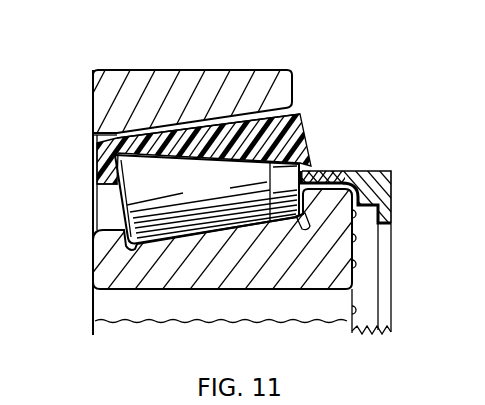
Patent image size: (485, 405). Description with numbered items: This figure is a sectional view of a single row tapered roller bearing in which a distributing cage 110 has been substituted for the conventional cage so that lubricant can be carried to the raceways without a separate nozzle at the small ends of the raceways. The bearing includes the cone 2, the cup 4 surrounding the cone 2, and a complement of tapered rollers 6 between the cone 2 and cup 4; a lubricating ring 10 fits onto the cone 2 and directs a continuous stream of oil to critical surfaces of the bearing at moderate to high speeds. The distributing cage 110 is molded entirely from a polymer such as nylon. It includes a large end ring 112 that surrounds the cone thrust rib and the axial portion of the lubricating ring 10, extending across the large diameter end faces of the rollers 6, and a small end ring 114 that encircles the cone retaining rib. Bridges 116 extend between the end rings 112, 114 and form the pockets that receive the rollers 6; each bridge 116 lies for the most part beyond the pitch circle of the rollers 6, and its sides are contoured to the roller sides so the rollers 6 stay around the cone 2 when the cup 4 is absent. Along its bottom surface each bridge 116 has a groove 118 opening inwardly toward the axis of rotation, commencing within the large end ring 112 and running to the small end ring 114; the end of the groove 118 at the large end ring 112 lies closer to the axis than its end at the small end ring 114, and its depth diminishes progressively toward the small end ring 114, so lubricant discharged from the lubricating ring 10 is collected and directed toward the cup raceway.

The cup 4 is at (178, 87).
The bridges 116 is at (300, 115).
The distributing cage 110 is at (322, 129).
The large end ring 112 is at (311, 156).
The small end ring 114 is at (93, 202).
The lubricating ring 10 is at (388, 213).
The tapered rollers 6 is at (112, 278).
The cone 2 is at (187, 280).
The groove 118 is at (263, 223).